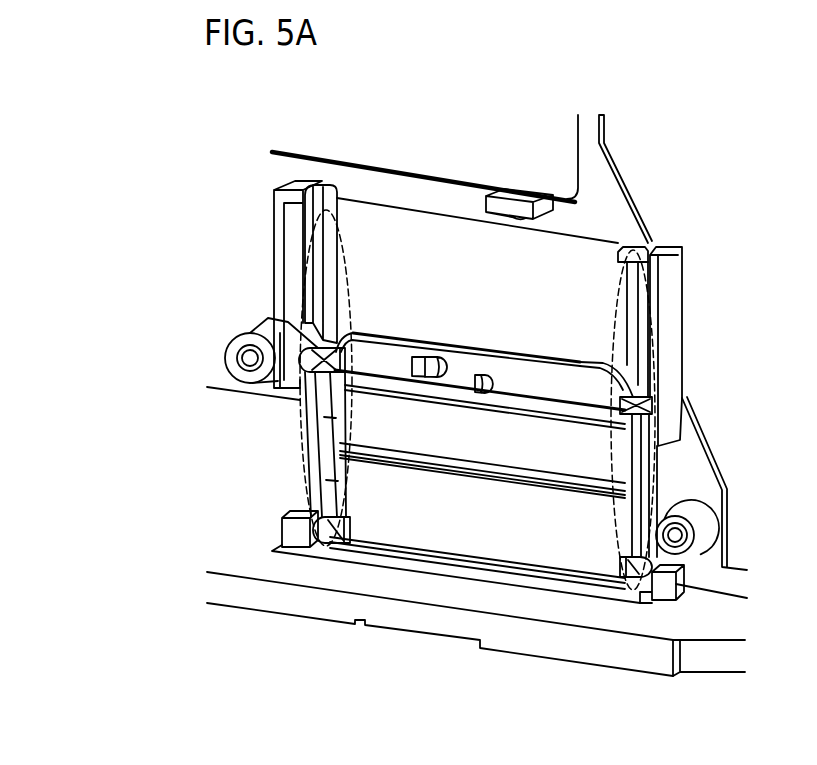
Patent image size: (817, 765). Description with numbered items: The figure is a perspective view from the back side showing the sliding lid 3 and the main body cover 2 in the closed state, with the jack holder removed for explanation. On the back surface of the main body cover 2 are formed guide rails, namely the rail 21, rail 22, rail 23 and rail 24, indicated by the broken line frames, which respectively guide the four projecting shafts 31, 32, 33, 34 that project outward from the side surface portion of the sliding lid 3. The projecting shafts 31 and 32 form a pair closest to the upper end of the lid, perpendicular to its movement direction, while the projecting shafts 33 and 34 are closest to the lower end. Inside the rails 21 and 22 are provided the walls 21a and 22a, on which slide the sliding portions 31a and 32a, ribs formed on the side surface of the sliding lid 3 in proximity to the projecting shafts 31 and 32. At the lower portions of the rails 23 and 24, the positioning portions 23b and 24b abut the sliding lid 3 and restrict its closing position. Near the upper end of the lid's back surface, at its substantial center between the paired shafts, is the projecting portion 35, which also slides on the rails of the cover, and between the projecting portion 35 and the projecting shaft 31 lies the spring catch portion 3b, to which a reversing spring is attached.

The main body cover 2 is at (273, 210).
The rail 21 is at (313, 297).
The wall 21a is at (333, 267).
The rail 22 is at (633, 327).
The wall 22a is at (627, 293).
The rail 23 is at (327, 445).
The positioning portion 23b is at (323, 543).
The rail 24 is at (645, 476).
The positioning portion 24b is at (637, 573).
The sliding lid 3 is at (443, 510).
The spring catch portion 3b is at (420, 357).
The projecting shaft 31 is at (312, 360).
The sliding portion 31a is at (320, 350).
The projecting shaft 32 is at (682, 397).
The sliding portion 32a is at (633, 392).
The projecting shaft 33 is at (287, 515).
The projecting shaft 34 is at (668, 562).
The projecting portion 35 is at (477, 375).